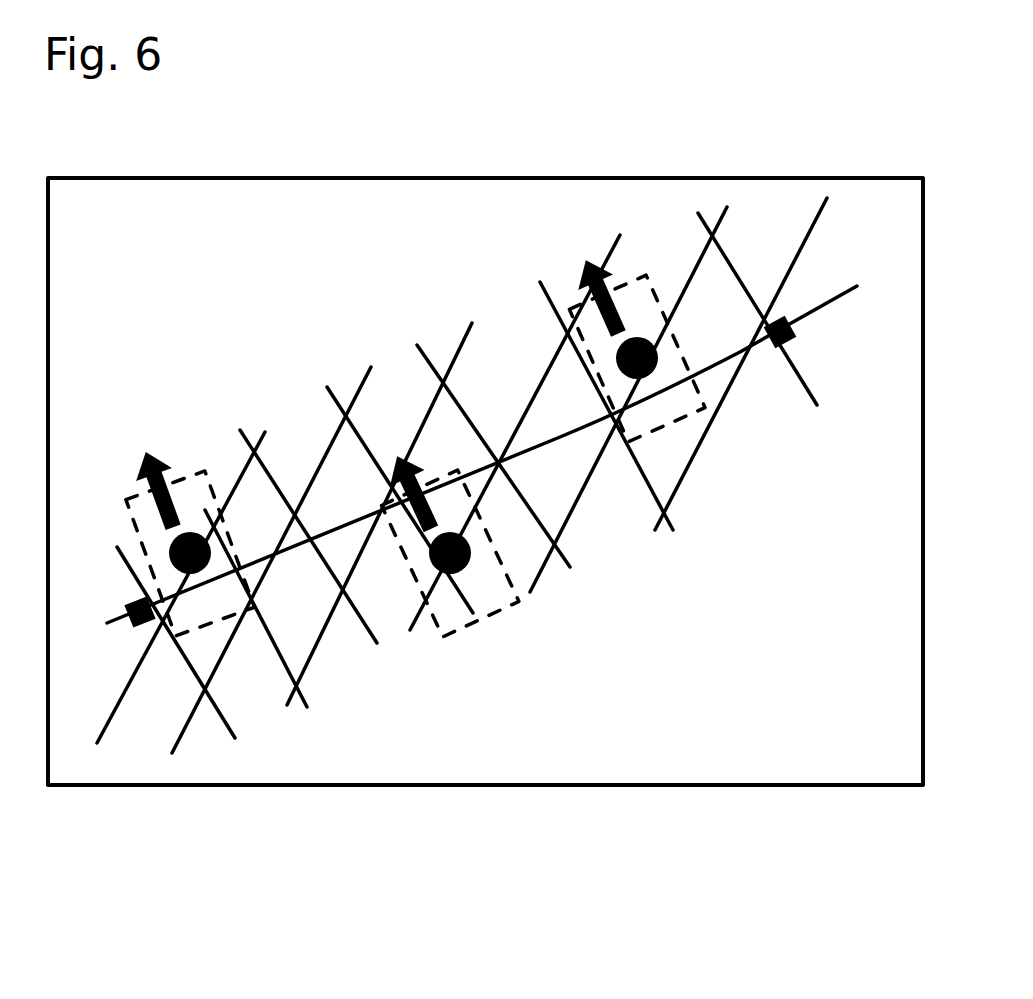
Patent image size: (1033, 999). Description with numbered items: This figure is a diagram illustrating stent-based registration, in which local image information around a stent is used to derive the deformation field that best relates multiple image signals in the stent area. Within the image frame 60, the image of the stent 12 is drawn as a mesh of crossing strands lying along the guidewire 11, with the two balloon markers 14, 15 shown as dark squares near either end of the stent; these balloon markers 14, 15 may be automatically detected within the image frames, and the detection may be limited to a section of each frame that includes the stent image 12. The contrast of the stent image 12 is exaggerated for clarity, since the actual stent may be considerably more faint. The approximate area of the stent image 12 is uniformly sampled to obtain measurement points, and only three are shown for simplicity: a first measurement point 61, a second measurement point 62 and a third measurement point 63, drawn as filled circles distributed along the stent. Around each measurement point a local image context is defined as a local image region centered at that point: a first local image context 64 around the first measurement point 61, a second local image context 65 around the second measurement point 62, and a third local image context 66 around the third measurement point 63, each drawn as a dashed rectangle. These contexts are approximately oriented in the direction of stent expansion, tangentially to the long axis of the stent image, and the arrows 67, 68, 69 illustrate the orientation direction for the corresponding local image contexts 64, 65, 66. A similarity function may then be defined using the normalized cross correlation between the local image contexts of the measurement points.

The guidewire 11 is at (530, 448).
The stent 12 is at (312, 657).
The balloon marker 14 is at (140, 612).
The balloon marker 15 is at (790, 320).
The display frame 60 is at (485, 499).
The first measurement point 61 is at (190, 560).
The second measurement point 62 is at (450, 560).
The third measurement point 63 is at (648, 378).
The first local image context 64 is at (125, 515).
The second local image context 65 is at (403, 553).
The third local image context 66 is at (575, 327).
The arrow 67 is at (148, 452).
The arrow 68 is at (400, 457).
The arrow 69 is at (588, 263).